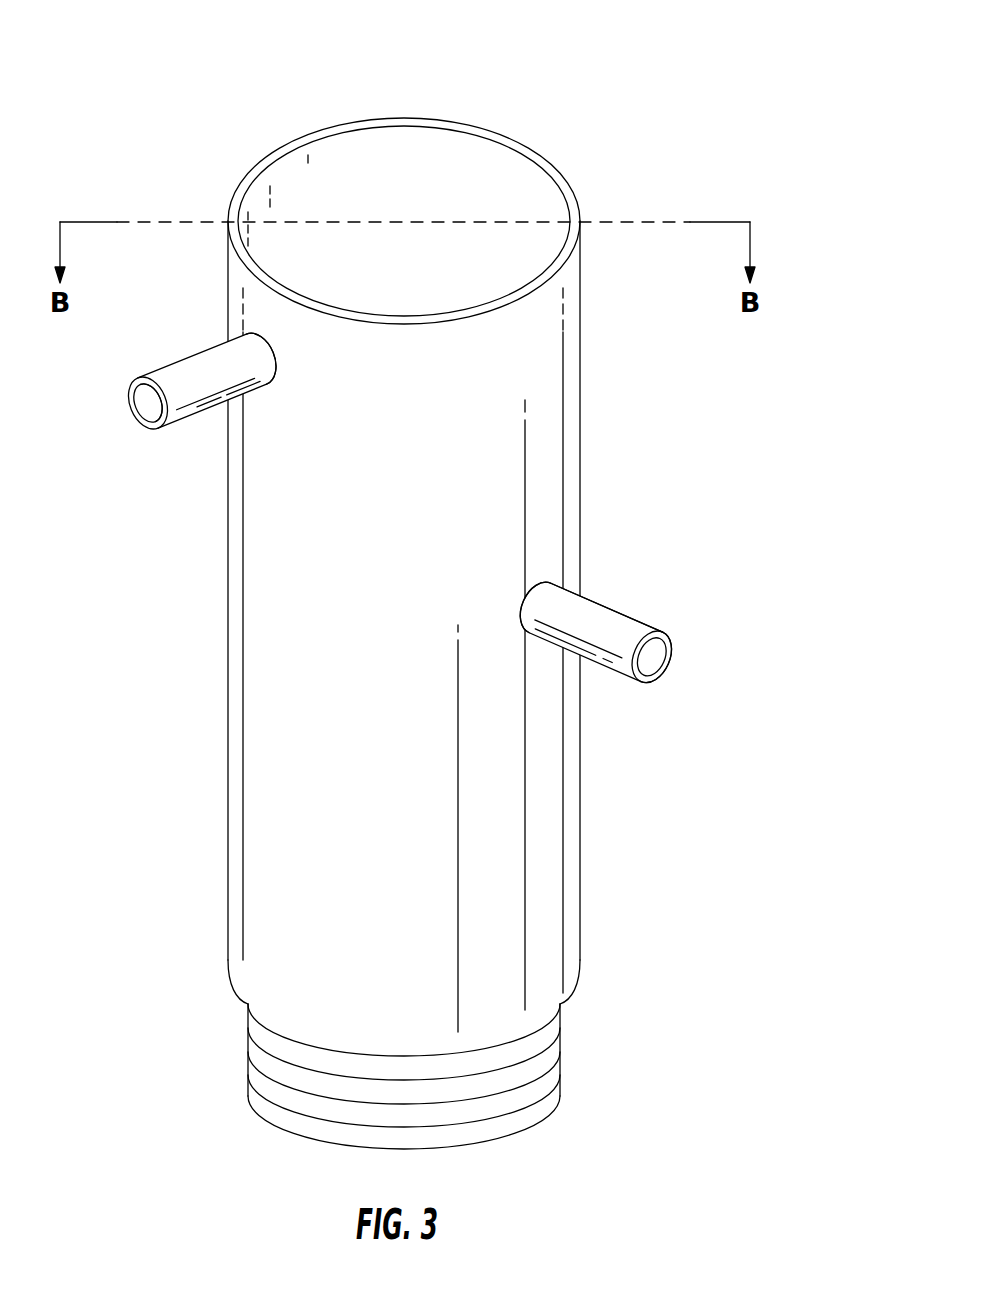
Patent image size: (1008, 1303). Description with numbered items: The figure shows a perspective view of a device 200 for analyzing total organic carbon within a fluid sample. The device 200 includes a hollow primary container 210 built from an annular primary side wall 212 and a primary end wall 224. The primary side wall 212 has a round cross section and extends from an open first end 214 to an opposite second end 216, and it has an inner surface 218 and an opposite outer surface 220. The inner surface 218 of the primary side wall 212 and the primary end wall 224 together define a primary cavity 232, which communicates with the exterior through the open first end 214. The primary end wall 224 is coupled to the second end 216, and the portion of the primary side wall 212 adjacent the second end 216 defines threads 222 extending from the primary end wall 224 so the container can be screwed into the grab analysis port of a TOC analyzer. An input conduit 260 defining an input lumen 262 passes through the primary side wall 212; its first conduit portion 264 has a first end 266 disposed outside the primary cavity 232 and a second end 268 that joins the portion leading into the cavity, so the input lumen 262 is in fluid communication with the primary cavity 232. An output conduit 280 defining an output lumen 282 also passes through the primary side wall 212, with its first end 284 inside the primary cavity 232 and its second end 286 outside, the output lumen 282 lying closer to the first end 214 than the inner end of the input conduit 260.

The device 200 is at (789, 99).
The primary container 210 is at (629, 157).
The primary side wall 212 is at (551, 420).
The first end 214 is at (515, 148).
The second end 216 is at (575, 990).
The inner surface 218 is at (355, 150).
The outer surface 220 is at (572, 508).
The threads 222 is at (562, 1048).
The primary end wall 224 is at (235, 985).
The primary cavity 232 is at (441, 147).
The input conduit 260 is at (617, 577).
The input lumen 262 is at (650, 658).
The first conduit portion 264 is at (650, 608).
The first end 266 is at (668, 652).
The second end 268 is at (540, 592).
The output conduit 280 is at (168, 328).
The output lumen 282 is at (140, 404).
The first end 284 is at (273, 366).
The second end 286 is at (143, 427).